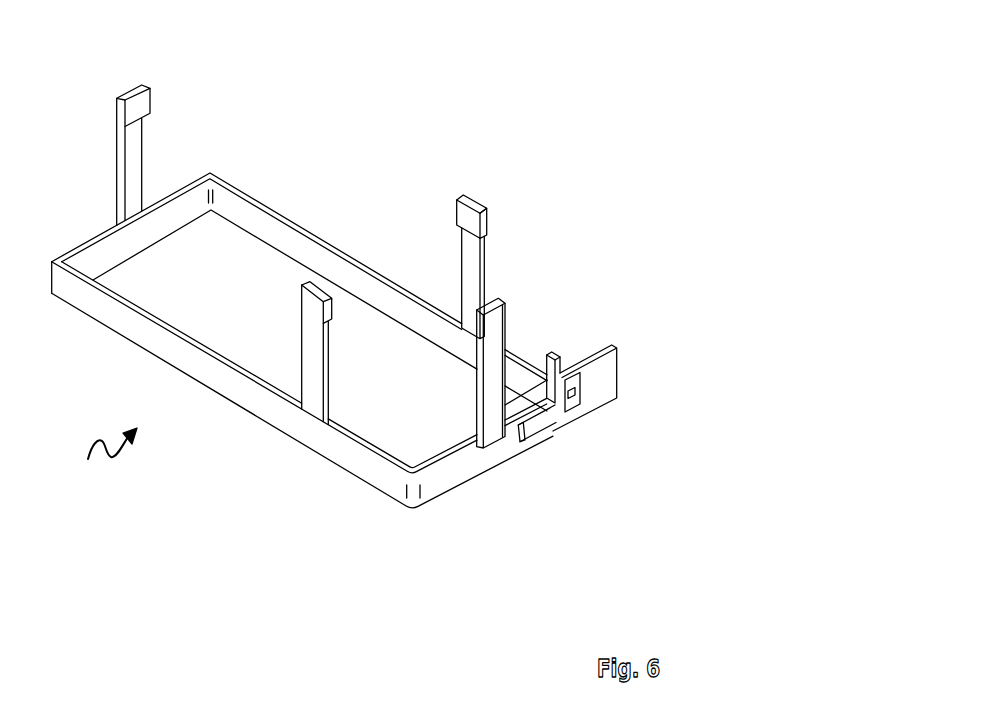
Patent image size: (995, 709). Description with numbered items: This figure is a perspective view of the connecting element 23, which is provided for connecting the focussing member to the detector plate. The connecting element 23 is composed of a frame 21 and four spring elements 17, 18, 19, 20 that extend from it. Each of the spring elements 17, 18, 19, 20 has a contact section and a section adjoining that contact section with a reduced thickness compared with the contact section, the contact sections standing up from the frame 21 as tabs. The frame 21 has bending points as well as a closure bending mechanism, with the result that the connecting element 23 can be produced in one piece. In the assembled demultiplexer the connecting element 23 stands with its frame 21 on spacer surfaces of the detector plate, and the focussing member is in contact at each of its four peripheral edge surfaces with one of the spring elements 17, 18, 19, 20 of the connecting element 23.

The spring element 17 is at (152, 100).
The spring element 18 is at (482, 198).
The spring element 19 is at (497, 323).
The spring element 20 is at (312, 373).
The frame 21 is at (373, 477).
The connecting element 23 is at (99, 452).